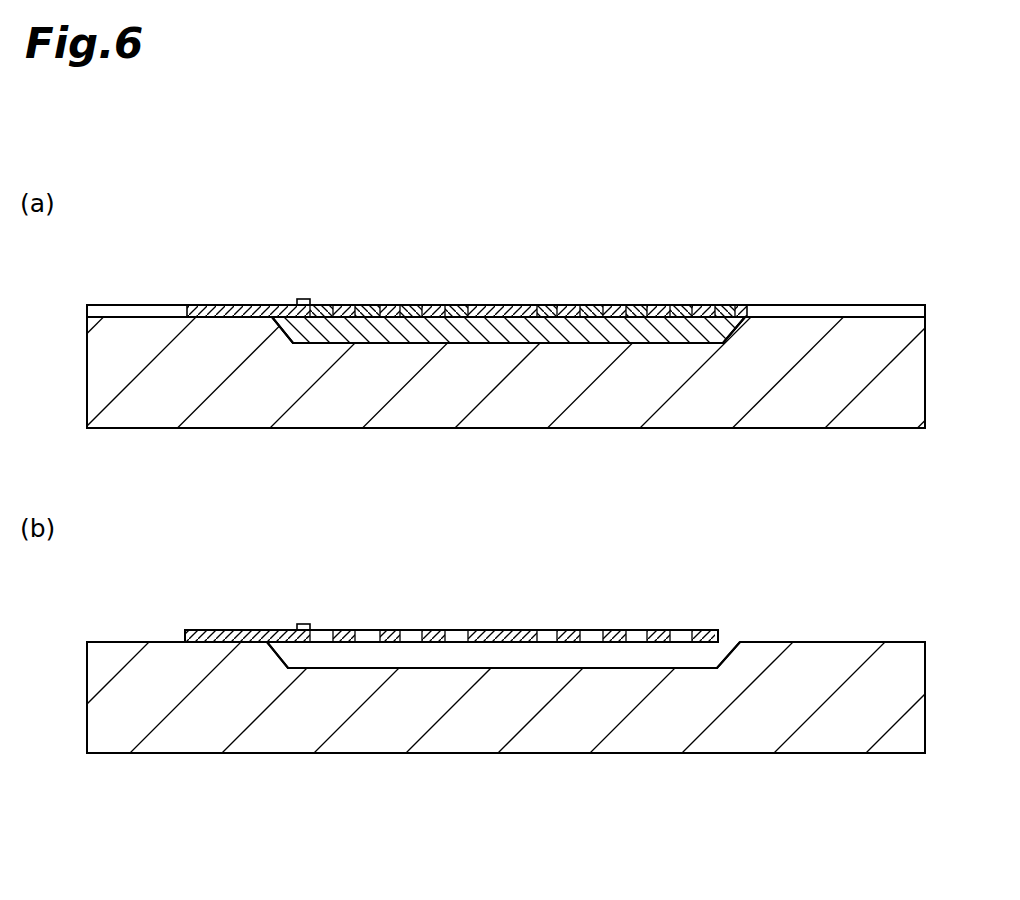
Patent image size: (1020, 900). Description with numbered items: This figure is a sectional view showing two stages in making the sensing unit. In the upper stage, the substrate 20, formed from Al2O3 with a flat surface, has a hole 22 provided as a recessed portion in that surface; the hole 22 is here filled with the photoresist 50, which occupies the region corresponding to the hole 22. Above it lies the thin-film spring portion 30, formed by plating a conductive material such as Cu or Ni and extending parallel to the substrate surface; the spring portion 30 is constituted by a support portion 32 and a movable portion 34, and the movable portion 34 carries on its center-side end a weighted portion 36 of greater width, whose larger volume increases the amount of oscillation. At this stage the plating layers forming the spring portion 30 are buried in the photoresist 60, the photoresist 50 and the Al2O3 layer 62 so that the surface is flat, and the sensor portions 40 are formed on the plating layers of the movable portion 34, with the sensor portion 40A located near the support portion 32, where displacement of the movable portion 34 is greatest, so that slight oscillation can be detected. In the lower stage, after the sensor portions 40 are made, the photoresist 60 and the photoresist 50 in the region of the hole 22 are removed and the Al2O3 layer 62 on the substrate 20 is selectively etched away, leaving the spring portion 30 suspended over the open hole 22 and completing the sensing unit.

The substrate 20 is at (760, 407).
The hole 22 is at (728, 305).
The spring portion 30 is at (226, 265).
The support portion 32 is at (238, 302).
The movable portion 34 is at (395, 303).
The weighted portion 36 is at (510, 305).
The sensor portion 40A is at (291, 427).
The sensor portions 40 is at (303, 298).
The photoresist 50 is at (592, 326).
The photoresist 60 is at (548, 305).
The Al2O3 layer 62 is at (837, 312).